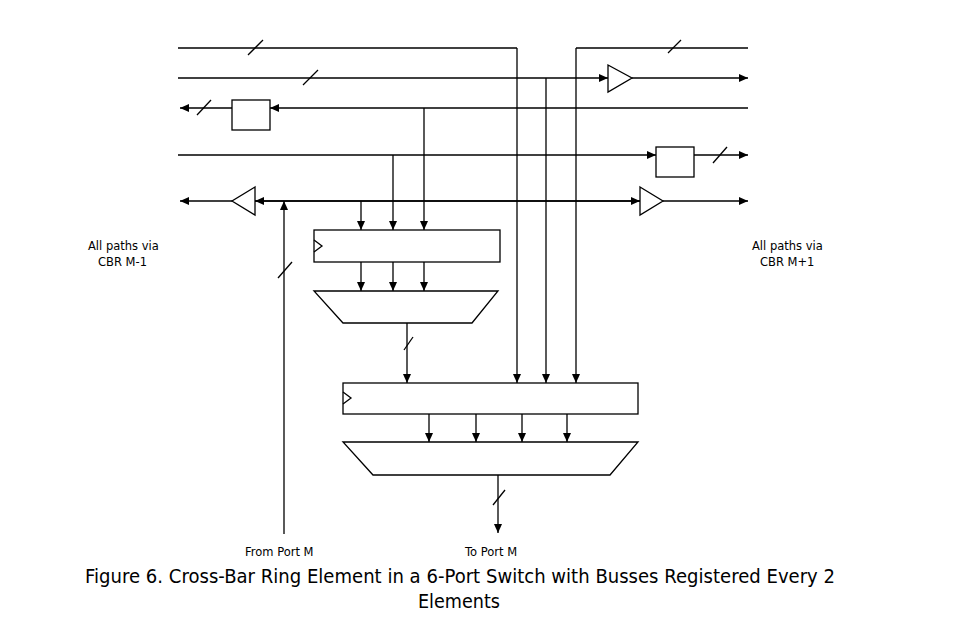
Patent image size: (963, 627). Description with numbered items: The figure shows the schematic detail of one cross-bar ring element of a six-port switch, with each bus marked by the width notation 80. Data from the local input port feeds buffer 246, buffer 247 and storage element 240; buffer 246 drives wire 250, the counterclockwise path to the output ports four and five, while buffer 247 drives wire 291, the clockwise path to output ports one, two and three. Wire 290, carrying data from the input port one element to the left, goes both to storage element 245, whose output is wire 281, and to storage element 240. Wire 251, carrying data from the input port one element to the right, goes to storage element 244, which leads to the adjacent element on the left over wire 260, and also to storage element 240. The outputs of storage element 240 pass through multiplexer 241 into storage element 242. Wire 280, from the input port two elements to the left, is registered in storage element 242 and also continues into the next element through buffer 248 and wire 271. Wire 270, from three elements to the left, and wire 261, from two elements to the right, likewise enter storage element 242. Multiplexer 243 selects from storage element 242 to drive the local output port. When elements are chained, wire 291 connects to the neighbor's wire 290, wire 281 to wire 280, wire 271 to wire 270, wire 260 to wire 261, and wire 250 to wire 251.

The 80-bit bus 80 is at (277, 367).
The storage element 240 is at (407, 251).
The multiplexer 241 is at (406, 337).
The storage element 242 is at (519, 412).
The multiplexer 243 is at (515, 487).
The storage element 244 is at (269, 123).
The storage element 245 is at (677, 151).
The buffer 246 is at (244, 213).
The buffer 247 is at (654, 211).
The buffer 248 is at (625, 70).
The wire 250 is at (135, 201).
The wire 251 is at (586, 161).
The wire 260 is at (136, 117).
The wire 261 is at (742, 209).
The wire 270 is at (275, 210).
The wire 271 is at (765, 77).
The wire 280 is at (320, 225).
The wire 281 is at (801, 159).
The wire 290 is at (360, 184).
The wire 291 is at (788, 201).